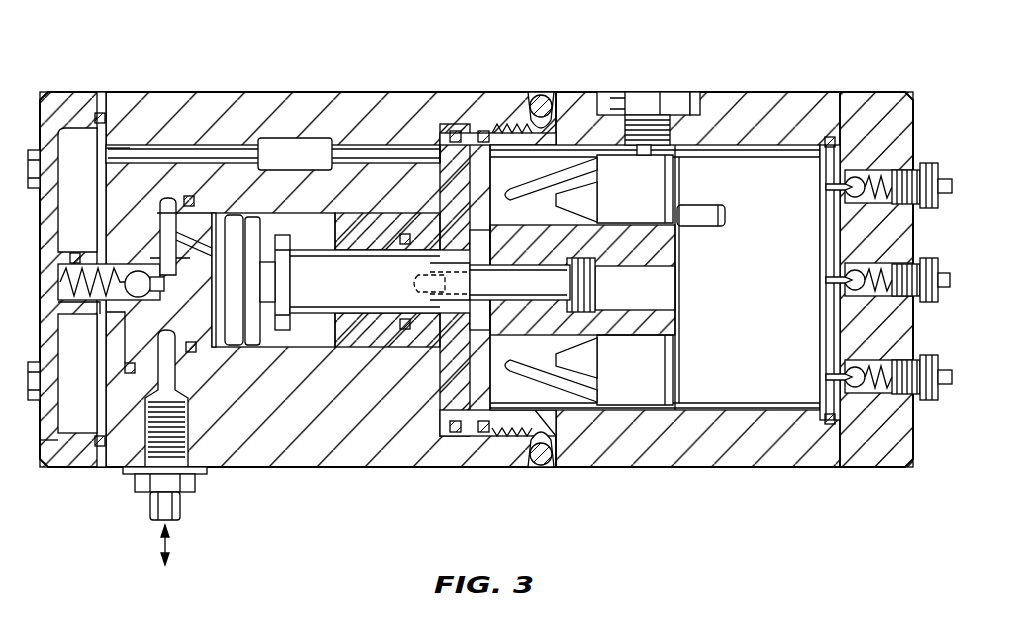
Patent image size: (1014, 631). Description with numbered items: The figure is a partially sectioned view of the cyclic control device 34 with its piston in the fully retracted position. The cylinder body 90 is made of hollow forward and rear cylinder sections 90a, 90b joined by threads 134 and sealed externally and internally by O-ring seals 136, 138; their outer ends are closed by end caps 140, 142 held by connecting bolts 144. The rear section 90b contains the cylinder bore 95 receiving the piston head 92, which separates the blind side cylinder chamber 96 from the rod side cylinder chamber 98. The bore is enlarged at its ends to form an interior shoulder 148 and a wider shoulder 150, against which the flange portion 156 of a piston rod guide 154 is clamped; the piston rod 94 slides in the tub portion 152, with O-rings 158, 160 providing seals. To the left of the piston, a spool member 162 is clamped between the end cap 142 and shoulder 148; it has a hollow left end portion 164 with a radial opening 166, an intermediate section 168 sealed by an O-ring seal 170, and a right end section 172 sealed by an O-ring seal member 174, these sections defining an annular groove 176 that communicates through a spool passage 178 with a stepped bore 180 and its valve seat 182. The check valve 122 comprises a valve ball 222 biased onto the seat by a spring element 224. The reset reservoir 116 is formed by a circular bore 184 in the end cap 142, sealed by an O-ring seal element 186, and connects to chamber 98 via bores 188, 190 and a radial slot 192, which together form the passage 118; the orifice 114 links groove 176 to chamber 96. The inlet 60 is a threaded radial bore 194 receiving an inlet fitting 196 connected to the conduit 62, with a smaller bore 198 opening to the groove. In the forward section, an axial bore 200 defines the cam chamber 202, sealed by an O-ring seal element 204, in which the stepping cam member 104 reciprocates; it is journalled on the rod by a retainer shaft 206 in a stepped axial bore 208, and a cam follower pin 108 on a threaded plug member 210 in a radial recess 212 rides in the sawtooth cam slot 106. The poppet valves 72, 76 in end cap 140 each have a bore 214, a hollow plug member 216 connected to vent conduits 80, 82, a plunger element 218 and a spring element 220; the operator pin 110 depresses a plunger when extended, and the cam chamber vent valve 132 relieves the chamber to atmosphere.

The cyclic control device 34 is at (370, 55).
The inlet 60 is at (176, 447).
The conduit 62 is at (182, 505).
The poppet valve 72 is at (875, 165).
The poppet valve 76 is at (918, 360).
The vent conduit 80 is at (945, 179).
The vent conduit 82 is at (942, 370).
The cylinder assembly or body 90 is at (476, 244).
The forward cylinder section 90a is at (768, 92).
The rear cylinder section 90b is at (188, 95).
The piston head 92 is at (262, 235).
The piston rod 94 is at (345, 293).
The cylinder bore 95 is at (315, 348).
The blind side cylinder chamber 96 is at (217, 347).
The rod side cylinder chamber 98 is at (392, 213).
The stepping cam member 104 is at (616, 208).
The cam slot 106 is at (545, 363).
The cam follower pin 108 is at (680, 160).
The operator pin 110 is at (702, 228).
The orifice 114 is at (290, 270).
The reset reservoir 116 is at (112, 145).
The passage 118 is at (226, 143).
The check valve 122 is at (160, 262).
The cam chamber vent valve 132 is at (918, 266).
The threads 134 is at (505, 124).
The O-ring seal 136 is at (543, 94).
The O-ring seal 138 is at (483, 130).
The end cap 140 is at (846, 92).
The end cap 142 is at (62, 92).
The connecting bolts 144 is at (40, 168).
The annular interior shoulder 148 is at (191, 189).
The annular interior shoulder 150 is at (432, 158).
The annular tub portion 152 is at (430, 305).
The piston rod guide 154 is at (436, 349).
The annular flange portion 156 is at (470, 182).
The O-ring 158 is at (455, 128).
The O-ring seal 160 is at (420, 244).
The spool member 162 is at (210, 370).
The left end portion 164 is at (77, 373).
The radial opening 166 is at (77, 190).
The intermediate section 168 is at (112, 360).
The O-ring seal 170 is at (128, 378).
The right end section 172 is at (245, 215).
The O-ring seal member 174 is at (200, 228).
The annular groove 176 is at (120, 370).
The spool passage 178 is at (160, 224).
The stepped bore 180 is at (124, 300).
The valve seat 182 is at (290, 294).
The circular bore 184 is at (80, 432).
The O-ring seal element 186 is at (100, 113).
The bore 188 is at (172, 150).
The bore 190 is at (330, 145).
The radial slot 192 is at (392, 140).
The radial bore 194 is at (180, 430).
The inlet fitting 196 is at (138, 480).
The bore 198 is at (172, 382).
The axial bore 200 is at (737, 410).
The cam chamber 202 is at (740, 145).
The O-ring seal element 204 is at (828, 137).
The retainer shaft 206 is at (538, 295).
The stepped axial bore 208 is at (600, 282).
The threaded plug member 210 is at (632, 92).
The radial recess 212 is at (696, 100).
The circular bore 214 is at (848, 174).
The hollow plug member 216 is at (908, 206).
The plunger element 218 is at (845, 193).
The spring element 220 is at (850, 204).
The valve ball 222 is at (152, 290).
The spring element 224 is at (170, 348).